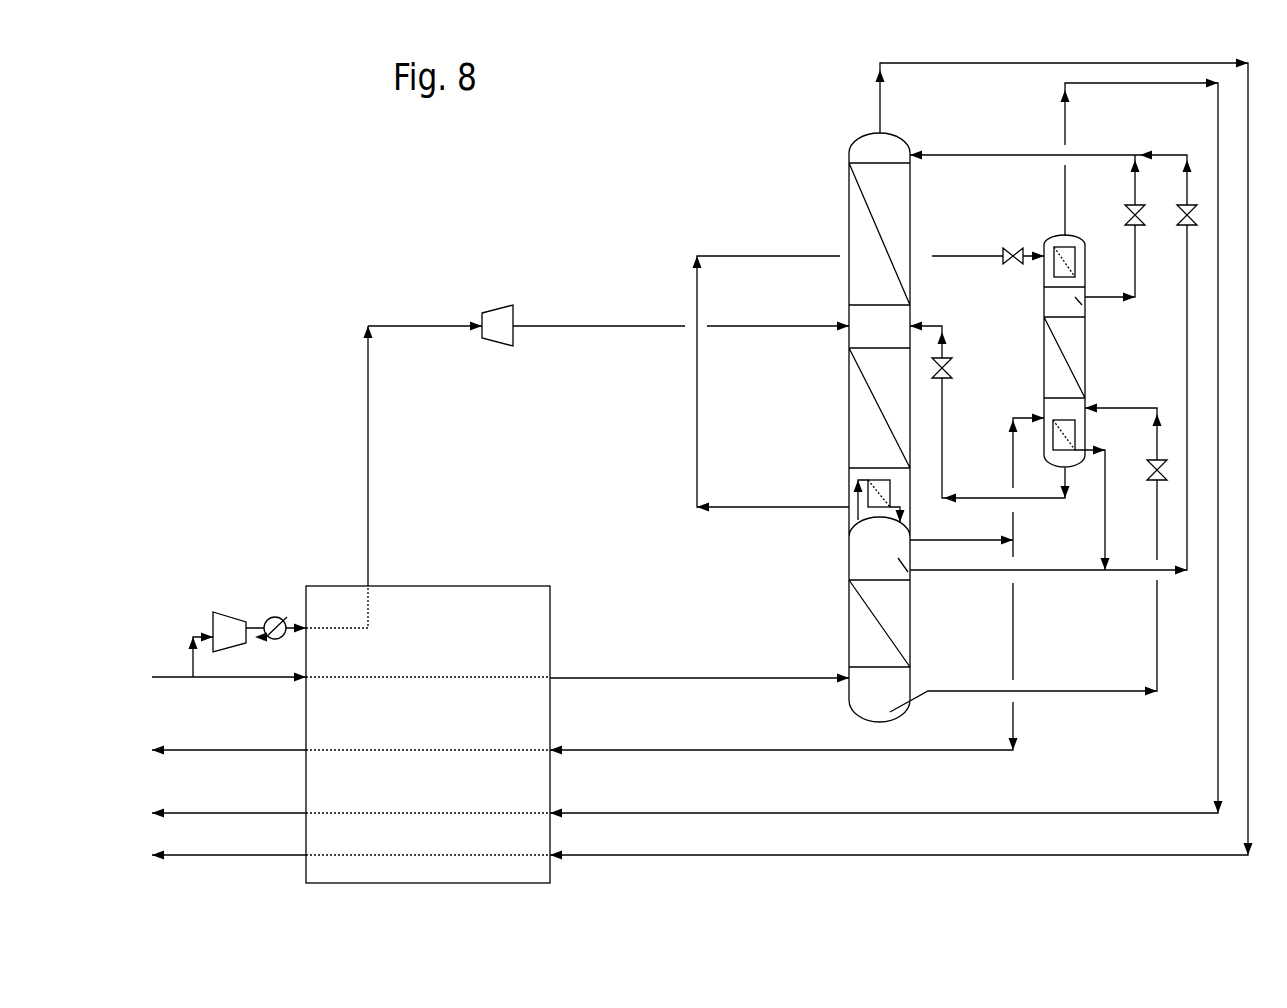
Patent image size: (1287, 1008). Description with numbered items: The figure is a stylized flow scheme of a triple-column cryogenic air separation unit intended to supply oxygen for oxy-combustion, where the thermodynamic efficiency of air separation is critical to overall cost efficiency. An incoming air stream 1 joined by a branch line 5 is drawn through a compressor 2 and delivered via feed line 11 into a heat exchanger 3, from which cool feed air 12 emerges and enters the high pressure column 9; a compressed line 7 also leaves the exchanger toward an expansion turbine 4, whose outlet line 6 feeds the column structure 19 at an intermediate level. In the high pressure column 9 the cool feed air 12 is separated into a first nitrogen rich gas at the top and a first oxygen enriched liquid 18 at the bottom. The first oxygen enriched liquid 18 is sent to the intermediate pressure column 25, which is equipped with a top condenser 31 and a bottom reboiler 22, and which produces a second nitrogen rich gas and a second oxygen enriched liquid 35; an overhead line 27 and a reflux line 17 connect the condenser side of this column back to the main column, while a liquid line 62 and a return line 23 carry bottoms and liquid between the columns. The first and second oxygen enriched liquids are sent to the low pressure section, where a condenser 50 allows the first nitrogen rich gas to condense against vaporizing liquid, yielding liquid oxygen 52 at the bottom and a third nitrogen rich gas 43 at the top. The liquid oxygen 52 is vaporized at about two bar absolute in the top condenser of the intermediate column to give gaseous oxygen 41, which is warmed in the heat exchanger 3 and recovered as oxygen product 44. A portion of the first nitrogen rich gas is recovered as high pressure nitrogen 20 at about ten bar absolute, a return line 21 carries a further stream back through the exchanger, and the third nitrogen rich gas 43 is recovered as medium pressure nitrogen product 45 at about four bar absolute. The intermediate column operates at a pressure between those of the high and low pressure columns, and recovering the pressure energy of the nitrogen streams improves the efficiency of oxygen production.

The feed gas stream 1 is at (172, 677).
The compressor 2 is at (237, 628).
The heat exchanger 3 is at (482, 586).
The expansion turbine 4 is at (493, 325).
The feed branch line 5 is at (193, 635).
The expanded gas line 6 is at (605, 327).
The compressed gas line 7 is at (370, 466).
The high pressure column 9 is at (912, 607).
The feed line 11 is at (235, 679).
The cool feed air 12 is at (643, 679).
The reflux line 17 is at (1183, 331).
The first oxygen enriched liquid 18 is at (1103, 693).
The separation column 19 is at (849, 424).
The high pressure nitrogen 20 is at (247, 750).
The return line 21 is at (722, 750).
The condenser 22 is at (1062, 449).
The liquid line 23 is at (1013, 512).
The intermediate pressure column 25 is at (1086, 358).
The overhead line 27 is at (1139, 250).
The condenser 31 is at (1077, 243).
The second oxygen enriched liquid 35 is at (943, 418).
The gaseous oxygen 41 is at (1057, 813).
The third nitrogen rich gas 43 is at (1057, 855).
The oxygen product 44 is at (223, 812).
The medium pressure nitrogen product 45 is at (218, 852).
The condenser 50 is at (890, 489).
The liquid oxygen 52 is at (795, 508).
The liquid line 62 is at (1107, 538).